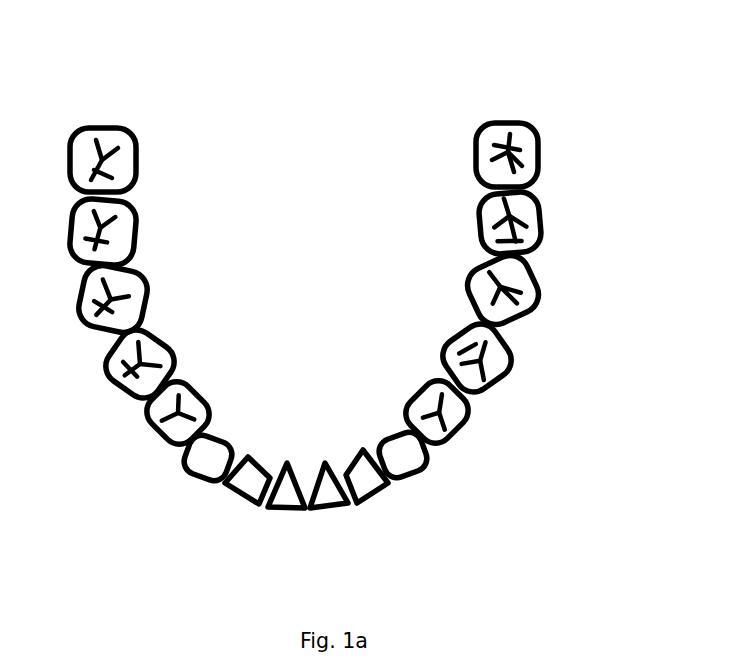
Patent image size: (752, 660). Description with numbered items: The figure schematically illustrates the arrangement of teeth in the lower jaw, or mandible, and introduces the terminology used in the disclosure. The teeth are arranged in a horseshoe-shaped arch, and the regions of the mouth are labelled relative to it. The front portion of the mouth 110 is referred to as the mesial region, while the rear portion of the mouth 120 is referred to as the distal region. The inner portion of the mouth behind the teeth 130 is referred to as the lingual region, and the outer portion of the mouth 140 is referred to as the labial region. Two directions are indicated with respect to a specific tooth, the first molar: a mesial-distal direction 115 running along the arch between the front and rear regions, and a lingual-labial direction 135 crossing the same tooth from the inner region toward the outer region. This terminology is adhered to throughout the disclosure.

The front portion of the mouth 110 is at (378, 541).
The mesial-distal direction 115 is at (50, 268).
The rear portion of the mouth 120 is at (552, 292).
The inner portion of the mouth behind the teeth 130 is at (296, 250).
The lingual-labial direction 135 is at (48, 319).
The outer portion of the mouth 140 is at (121, 453).